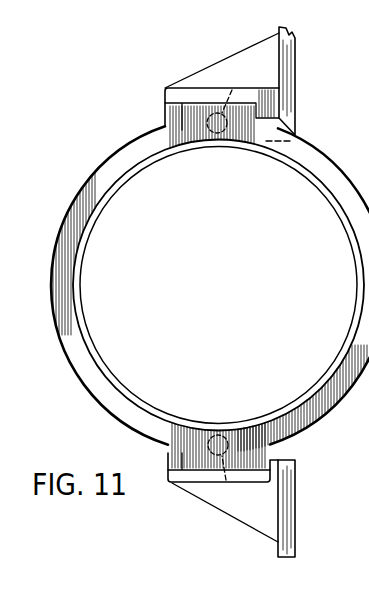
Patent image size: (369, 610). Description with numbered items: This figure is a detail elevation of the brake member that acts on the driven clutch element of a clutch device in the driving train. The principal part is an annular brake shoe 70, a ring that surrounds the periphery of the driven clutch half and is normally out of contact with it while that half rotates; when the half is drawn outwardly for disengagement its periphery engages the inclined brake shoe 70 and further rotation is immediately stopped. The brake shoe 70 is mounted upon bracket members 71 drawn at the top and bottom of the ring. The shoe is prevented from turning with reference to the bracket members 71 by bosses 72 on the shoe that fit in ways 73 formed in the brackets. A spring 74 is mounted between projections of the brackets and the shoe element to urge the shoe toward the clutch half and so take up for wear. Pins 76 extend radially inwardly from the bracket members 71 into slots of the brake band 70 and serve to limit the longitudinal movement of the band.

The annular brake shoe 70 is at (60, 330).
The bracket members 71 is at (295, 77).
The bosses 72 is at (196, 110).
The ways 73 is at (182, 101).
The spring 74 is at (215, 135).
The pins 76 is at (232, 90).